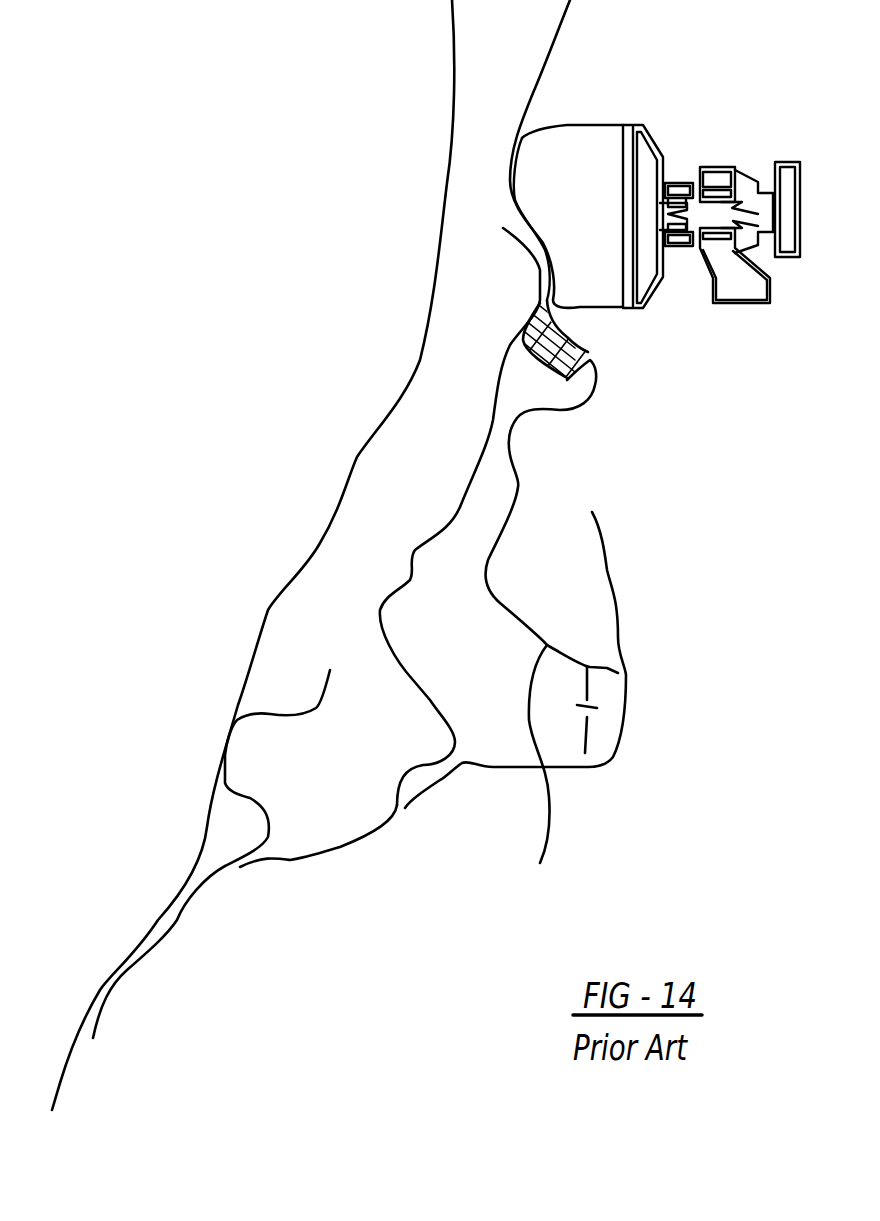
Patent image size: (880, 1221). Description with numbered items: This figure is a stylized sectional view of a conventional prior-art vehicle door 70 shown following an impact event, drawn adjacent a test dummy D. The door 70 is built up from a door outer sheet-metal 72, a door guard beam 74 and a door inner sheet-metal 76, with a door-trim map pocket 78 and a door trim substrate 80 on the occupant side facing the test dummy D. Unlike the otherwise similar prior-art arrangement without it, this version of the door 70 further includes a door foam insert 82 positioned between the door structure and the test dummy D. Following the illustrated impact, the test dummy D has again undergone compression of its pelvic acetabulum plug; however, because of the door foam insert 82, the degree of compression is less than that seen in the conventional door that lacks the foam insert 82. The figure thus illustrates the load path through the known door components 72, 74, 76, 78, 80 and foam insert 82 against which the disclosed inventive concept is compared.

The vehicle door 70 is at (243, 510).
The door outer sheet-metal 72 is at (265, 650).
The door guard beam 74 is at (250, 800).
The door inner sheet-metal 76 is at (303, 858).
The door-trim map pocket 78 is at (537, 776).
The door trim substrate 80 is at (585, 767).
The door foam insert 82 is at (577, 345).
The test dummy D is at (597, 143).